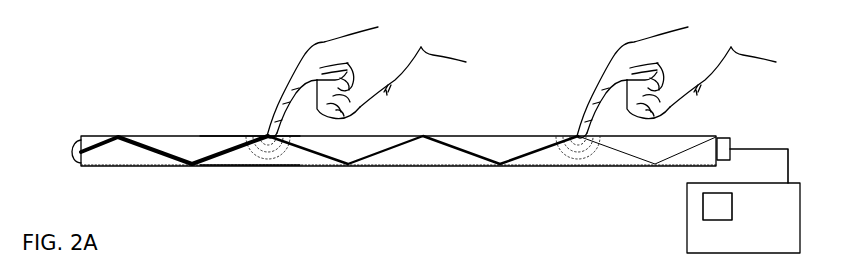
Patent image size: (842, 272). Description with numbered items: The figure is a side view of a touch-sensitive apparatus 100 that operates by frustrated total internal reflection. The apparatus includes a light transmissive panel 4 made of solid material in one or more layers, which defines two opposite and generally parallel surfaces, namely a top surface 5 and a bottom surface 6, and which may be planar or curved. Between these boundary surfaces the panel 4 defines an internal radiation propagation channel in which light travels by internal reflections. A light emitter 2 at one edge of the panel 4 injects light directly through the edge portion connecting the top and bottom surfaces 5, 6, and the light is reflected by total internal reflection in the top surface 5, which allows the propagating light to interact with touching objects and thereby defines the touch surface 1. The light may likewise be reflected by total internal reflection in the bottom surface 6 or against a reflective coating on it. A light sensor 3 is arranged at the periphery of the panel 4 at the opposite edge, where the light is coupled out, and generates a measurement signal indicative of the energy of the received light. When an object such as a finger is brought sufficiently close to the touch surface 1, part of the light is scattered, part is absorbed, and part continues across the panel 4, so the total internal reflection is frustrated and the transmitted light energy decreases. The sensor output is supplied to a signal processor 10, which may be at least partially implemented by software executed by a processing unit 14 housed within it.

The touch-sensitive apparatus 100 is at (126, 100).
The touch surface 1 is at (470, 135).
The light emitter 2 is at (80, 136).
The light sensor 3 is at (723, 137).
The light transmissive panel 4 is at (186, 143).
The top surface 5 is at (245, 135).
The bottom surface 6 is at (236, 167).
The signal processor 10 is at (687, 240).
The processing unit 14 is at (711, 210).